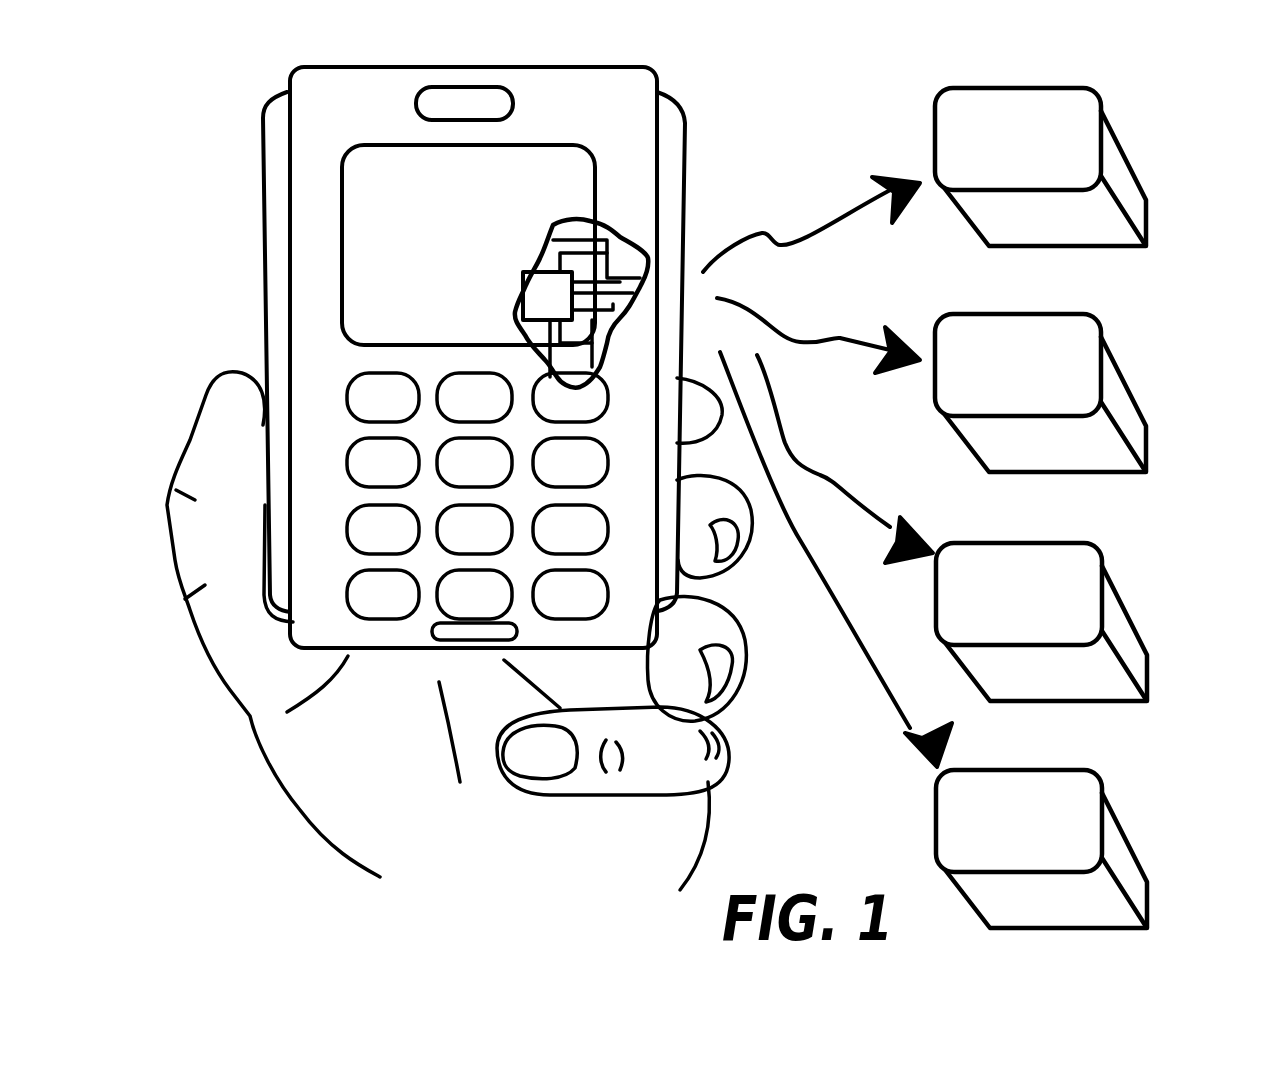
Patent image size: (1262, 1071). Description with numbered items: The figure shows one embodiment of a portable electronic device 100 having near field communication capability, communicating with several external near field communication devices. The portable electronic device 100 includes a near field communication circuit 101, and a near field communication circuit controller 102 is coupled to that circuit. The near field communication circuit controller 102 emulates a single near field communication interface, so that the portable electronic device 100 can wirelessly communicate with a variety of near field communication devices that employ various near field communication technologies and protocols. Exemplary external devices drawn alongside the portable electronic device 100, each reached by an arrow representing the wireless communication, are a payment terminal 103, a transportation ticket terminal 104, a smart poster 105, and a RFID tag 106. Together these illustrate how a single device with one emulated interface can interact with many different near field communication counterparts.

The portable electronic device 100 is at (287, 303).
The near field communication circuit 101 is at (543, 260).
The near field communication circuit controller 102 is at (545, 290).
The payment terminal 103 is at (1101, 111).
The transportation ticket terminal 104 is at (1101, 338).
The smart poster 105 is at (1103, 565).
The RFID tag 106 is at (1103, 793).